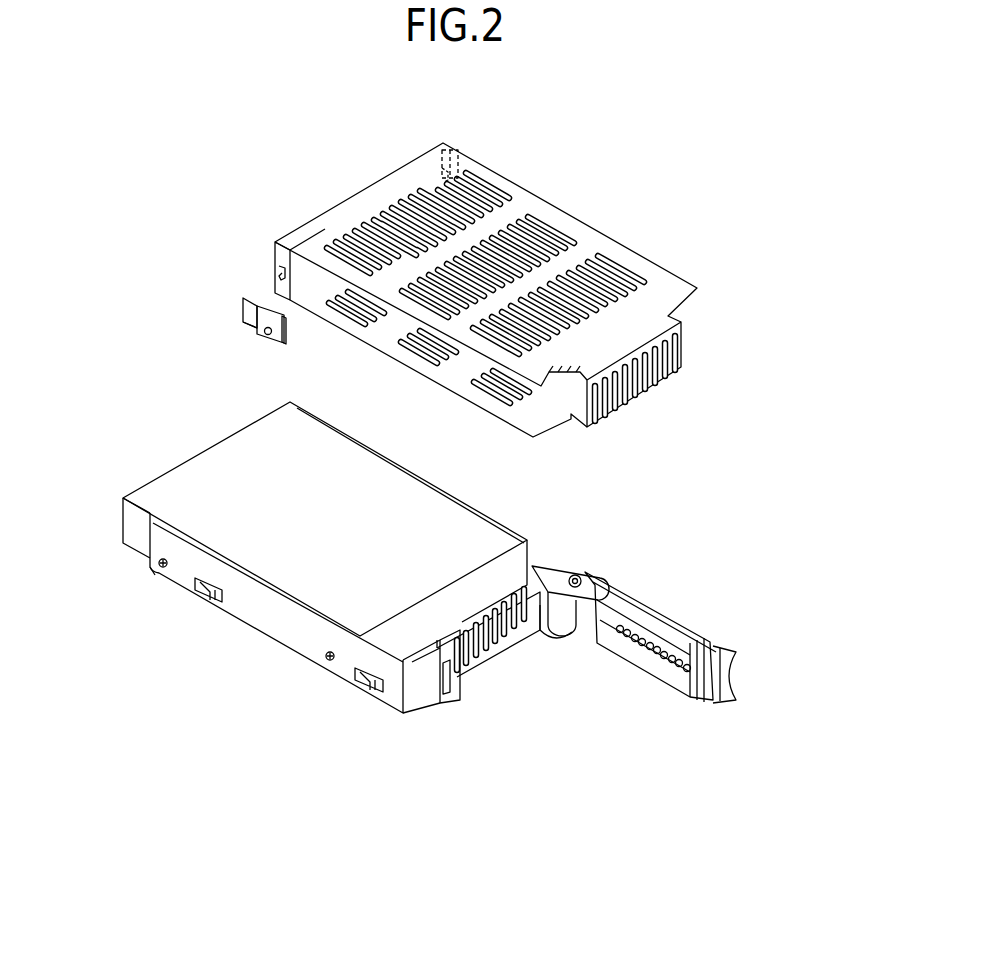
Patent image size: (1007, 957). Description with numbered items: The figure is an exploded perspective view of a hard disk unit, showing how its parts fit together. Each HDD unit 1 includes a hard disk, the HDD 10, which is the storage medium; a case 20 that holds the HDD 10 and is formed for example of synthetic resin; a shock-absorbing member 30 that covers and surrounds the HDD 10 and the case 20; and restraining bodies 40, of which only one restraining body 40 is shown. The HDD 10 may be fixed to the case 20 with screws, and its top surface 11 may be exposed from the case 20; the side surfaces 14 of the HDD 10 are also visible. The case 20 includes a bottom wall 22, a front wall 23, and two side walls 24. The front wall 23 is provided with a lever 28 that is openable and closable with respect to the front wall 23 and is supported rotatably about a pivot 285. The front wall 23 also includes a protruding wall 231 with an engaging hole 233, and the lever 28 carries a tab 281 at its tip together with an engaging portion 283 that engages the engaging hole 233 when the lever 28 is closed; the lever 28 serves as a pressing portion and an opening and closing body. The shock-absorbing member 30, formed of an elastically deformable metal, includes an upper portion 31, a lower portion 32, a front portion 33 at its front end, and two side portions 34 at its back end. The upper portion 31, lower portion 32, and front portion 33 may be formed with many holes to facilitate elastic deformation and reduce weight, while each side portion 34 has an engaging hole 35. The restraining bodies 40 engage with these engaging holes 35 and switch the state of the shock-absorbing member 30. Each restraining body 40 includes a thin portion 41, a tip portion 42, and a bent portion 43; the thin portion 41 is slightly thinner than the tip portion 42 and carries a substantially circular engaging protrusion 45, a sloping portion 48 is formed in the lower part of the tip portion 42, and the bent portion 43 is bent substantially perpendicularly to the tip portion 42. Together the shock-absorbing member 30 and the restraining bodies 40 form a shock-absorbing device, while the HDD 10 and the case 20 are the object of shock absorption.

The HDD unit 1 is at (560, 142).
The hard disk (HDD) 10 is at (135, 488).
The top surface 11 is at (442, 518).
The side surface of drive 14 is at (133, 541).
The case 20 is at (273, 645).
The bottom wall 22 is at (505, 658).
The front wall 23 is at (470, 673).
The protruding wall 231 is at (435, 688).
The engaging hole 233 is at (445, 698).
The side wall 24 is at (236, 606).
The lever 28 is at (660, 612).
The tab 281 is at (737, 675).
The engaging portion 283 is at (707, 712).
The pivot 285 is at (578, 576).
The shock-absorbing member 30 is at (697, 289).
The upper portion 31 is at (598, 234).
The lower portion 32 is at (502, 402).
The front portion 33 is at (671, 381).
The side portion 34 is at (272, 240).
The engaging hole 35 is at (274, 273).
The restraining body 40 is at (252, 349).
The thin portion 41 is at (284, 313).
The tip portion 42 is at (243, 305).
The bent portion 43 is at (284, 342).
The engaging protrusion 45 is at (268, 336).
The sloping portion 48 is at (247, 318).